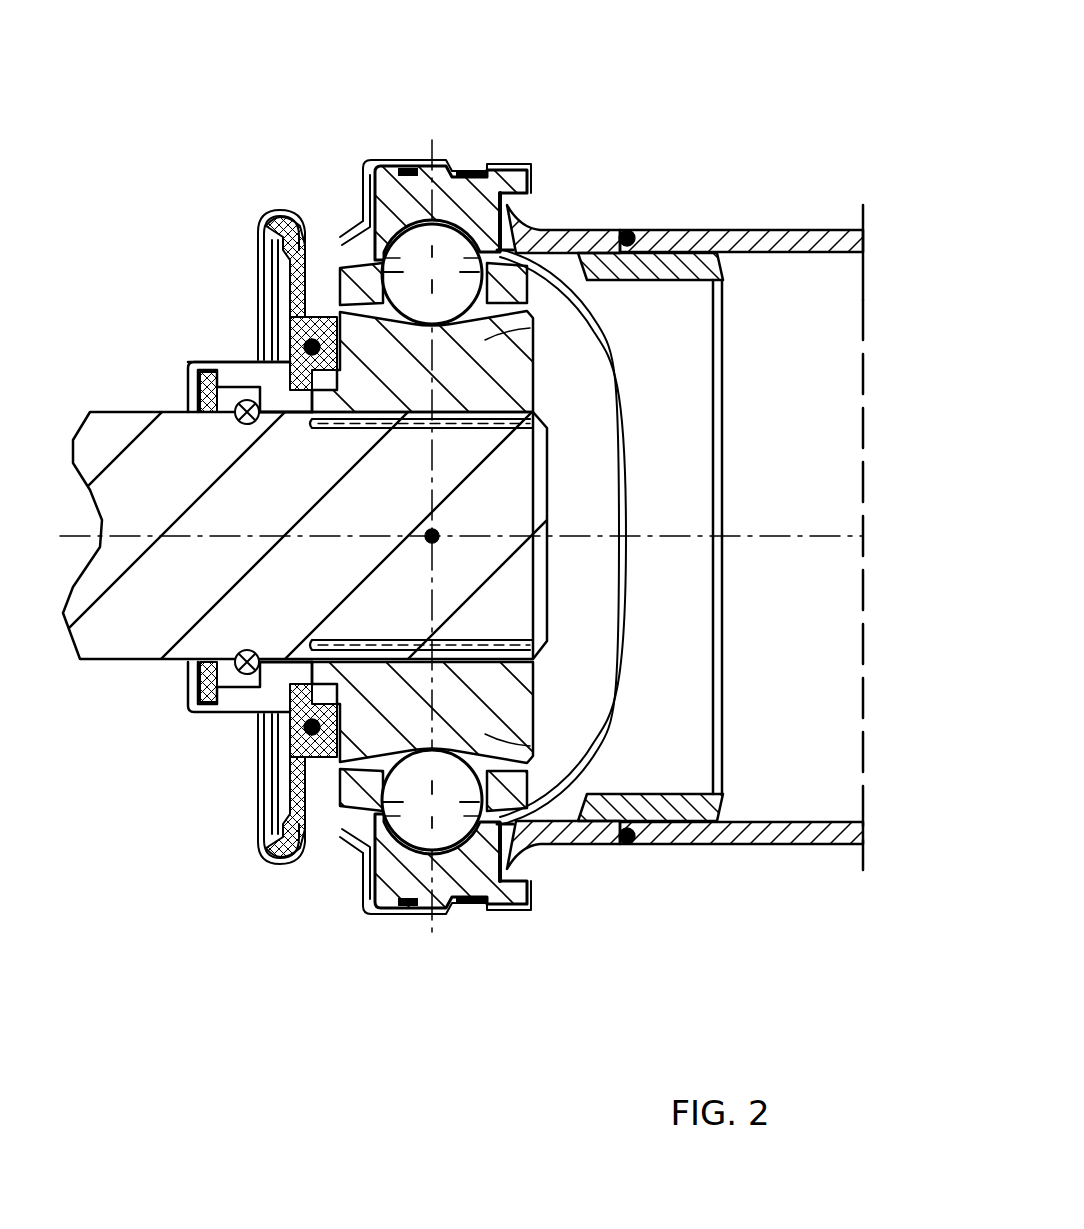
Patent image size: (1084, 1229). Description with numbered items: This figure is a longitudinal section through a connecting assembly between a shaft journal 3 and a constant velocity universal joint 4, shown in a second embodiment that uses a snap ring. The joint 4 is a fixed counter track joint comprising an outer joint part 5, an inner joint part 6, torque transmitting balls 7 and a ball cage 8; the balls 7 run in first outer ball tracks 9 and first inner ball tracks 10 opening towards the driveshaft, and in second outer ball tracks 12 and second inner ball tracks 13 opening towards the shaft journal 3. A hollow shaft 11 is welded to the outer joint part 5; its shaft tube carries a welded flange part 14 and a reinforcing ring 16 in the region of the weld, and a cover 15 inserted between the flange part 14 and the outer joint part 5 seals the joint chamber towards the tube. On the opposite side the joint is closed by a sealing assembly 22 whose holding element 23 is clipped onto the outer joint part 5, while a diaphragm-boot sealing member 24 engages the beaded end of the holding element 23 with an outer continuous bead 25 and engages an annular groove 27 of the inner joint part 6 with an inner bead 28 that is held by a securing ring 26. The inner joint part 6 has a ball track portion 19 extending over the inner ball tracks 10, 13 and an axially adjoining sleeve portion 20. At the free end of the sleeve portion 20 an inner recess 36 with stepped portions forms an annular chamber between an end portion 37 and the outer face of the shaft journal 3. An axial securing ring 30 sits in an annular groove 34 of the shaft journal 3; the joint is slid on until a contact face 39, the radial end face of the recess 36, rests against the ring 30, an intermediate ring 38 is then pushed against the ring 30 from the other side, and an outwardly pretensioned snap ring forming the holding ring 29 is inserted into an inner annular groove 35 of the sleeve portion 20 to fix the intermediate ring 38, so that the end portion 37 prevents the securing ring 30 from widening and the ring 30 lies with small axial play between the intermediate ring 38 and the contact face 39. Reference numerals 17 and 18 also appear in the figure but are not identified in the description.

The shaft journal 3 is at (95, 637).
The constant velocity universal joint 4 is at (437, 112).
The outer joint part 5 is at (483, 240).
The inner joint part 6 is at (533, 398).
The torque transmitting balls 7 is at (454, 248).
The ball cage 8 is at (548, 227).
The first outer ball tracks 9 is at (515, 170).
The first inner ball tracks 10 is at (530, 333).
The hollow shaft 11 is at (806, 215).
The second outer ball tracks 12 is at (392, 850).
The second inner ball tracks 13 is at (373, 768).
The flange part 14 is at (572, 845).
The cover 15 is at (630, 637).
The reinforcing ring 16 is at (680, 828).
The hub lower portion 17 is at (540, 620).
The hub body 18 is at (533, 493).
The ball track portion 19 is at (410, 400).
The sleeve portion 20 is at (313, 420).
The sealing assembly 22 is at (338, 218).
The holding element 23 is at (372, 160).
The sealing member 24 is at (257, 243).
The outer continuous bead 25 is at (277, 214).
The securing ring 26 is at (258, 280).
The annular groove 27 is at (290, 345).
The inner bead 28 is at (297, 700).
The holding ring 29 is at (188, 380).
The axial securing ring 30 is at (227, 423).
The annular groove 34 is at (248, 424).
The inner annular groove 35 is at (192, 362).
The inner recess 36 is at (208, 660).
The end portion 37 is at (225, 703).
The intermediate ring 38 is at (215, 370).
The contact face 39 is at (248, 650).